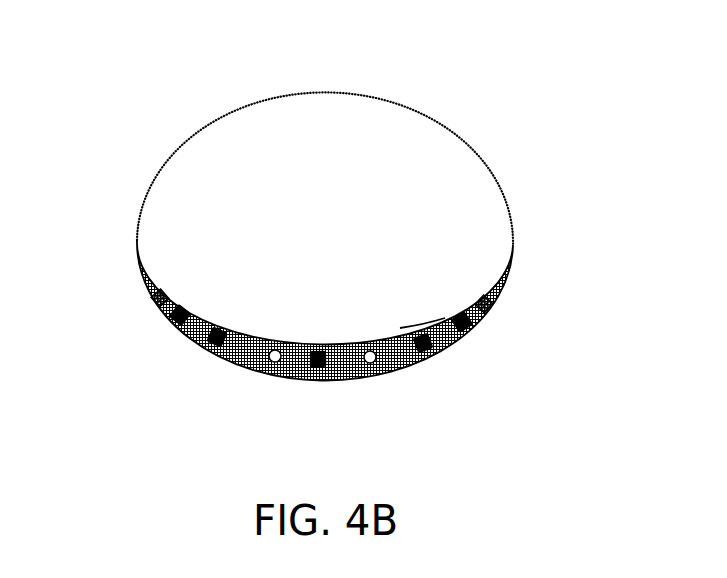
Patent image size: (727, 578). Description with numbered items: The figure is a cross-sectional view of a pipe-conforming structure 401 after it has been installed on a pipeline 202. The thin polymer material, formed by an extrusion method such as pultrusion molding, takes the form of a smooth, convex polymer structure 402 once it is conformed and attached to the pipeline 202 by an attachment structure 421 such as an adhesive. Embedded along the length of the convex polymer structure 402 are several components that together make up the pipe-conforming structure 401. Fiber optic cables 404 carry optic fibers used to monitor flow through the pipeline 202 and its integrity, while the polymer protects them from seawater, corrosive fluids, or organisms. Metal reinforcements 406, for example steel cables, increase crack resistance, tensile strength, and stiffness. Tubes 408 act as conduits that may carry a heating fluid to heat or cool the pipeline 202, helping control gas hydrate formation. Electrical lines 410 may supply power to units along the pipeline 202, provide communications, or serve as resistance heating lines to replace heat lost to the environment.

The pipeline 202 is at (488, 142).
The pipe-conforming structure 401 is at (317, 408).
The smooth, convex polymer structure 402 is at (143, 262).
The fiber optic cable 404 is at (203, 357).
The metal reinforcements 406 is at (170, 327).
The tubes 408 is at (272, 366).
The electrical lines 410 is at (155, 303).
The attachment structure 421 is at (422, 328).